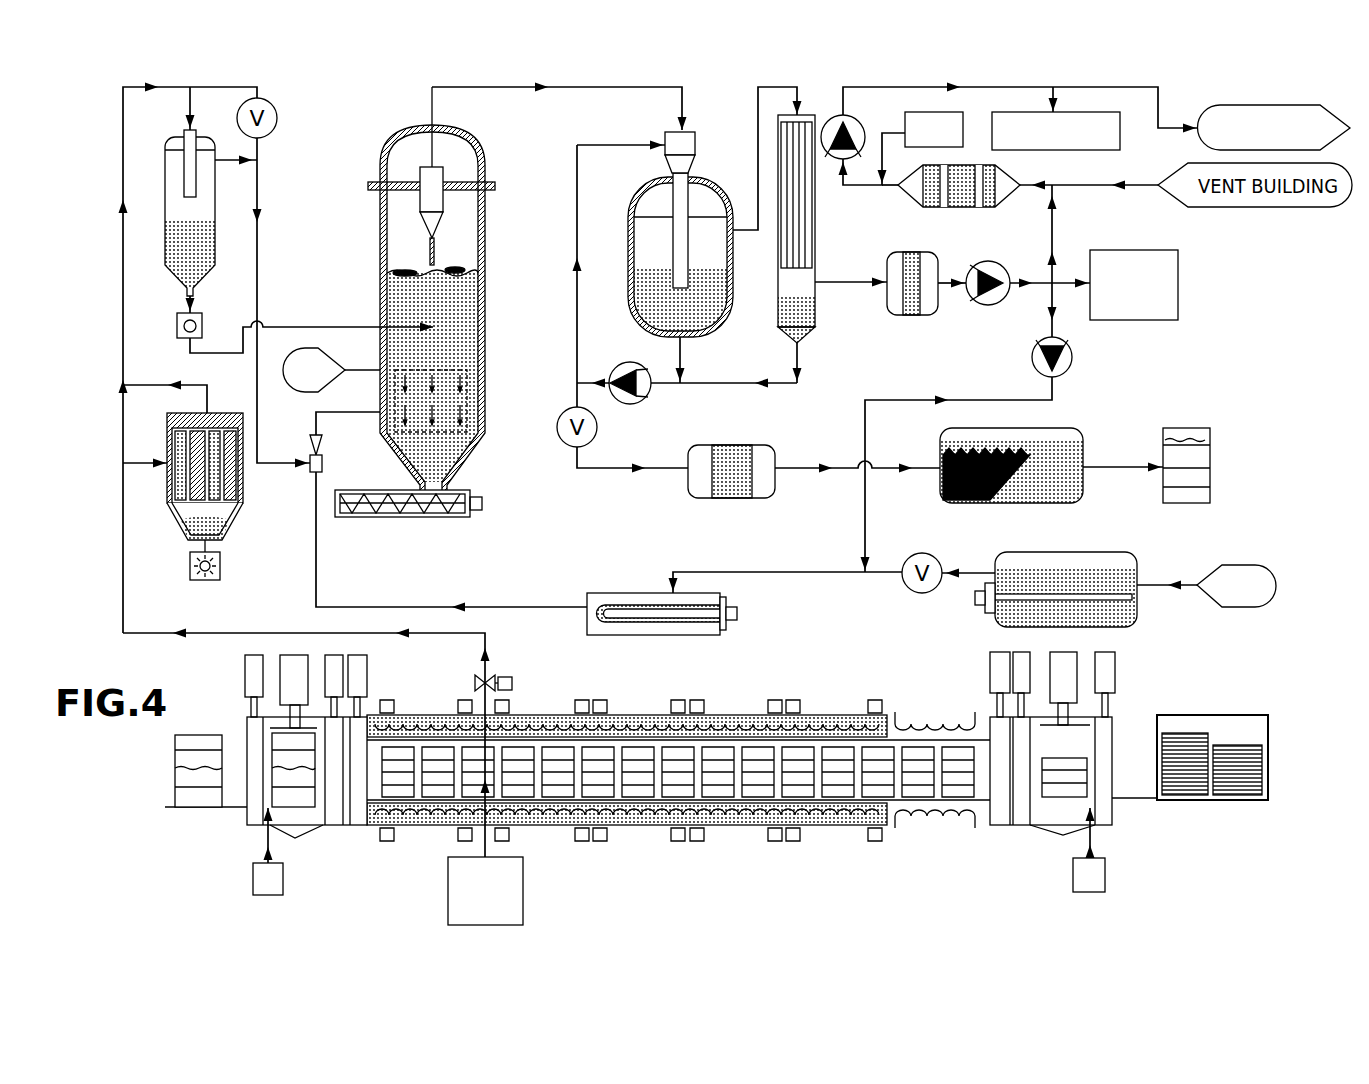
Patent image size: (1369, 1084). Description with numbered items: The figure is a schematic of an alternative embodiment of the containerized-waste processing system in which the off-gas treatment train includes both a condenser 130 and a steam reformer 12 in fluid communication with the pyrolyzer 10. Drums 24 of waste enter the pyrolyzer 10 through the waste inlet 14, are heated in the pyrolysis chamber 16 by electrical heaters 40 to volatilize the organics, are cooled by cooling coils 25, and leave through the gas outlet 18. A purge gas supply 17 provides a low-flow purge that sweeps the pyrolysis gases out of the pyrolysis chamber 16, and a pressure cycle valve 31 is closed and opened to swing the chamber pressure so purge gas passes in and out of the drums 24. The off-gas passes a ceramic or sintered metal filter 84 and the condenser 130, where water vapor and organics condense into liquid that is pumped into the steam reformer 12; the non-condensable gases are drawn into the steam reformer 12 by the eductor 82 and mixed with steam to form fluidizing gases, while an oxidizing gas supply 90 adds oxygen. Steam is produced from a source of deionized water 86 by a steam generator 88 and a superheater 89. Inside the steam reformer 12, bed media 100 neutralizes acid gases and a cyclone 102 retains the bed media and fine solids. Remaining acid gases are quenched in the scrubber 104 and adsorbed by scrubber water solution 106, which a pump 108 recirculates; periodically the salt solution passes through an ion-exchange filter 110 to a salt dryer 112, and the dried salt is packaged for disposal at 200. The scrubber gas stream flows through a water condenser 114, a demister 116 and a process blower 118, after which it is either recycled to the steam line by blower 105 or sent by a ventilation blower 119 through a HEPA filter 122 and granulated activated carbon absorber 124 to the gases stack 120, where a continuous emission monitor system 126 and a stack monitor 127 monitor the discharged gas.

The pyrolyzer 10 is at (658, 860).
The steam reformer 12 is at (433, 302).
The waste inlet 14 is at (342, 826).
The pyrolysis chamber 16 is at (825, 826).
The purge gas supply 17 is at (523, 890).
The gas outlet 18 is at (1021, 826).
The drums 24 is at (178, 742).
The cooling coils 25 is at (978, 826).
The pressure cycle valve 31 is at (475, 683).
The electrical heaters 40 is at (420, 812).
The eductor 82 is at (309, 443).
The ceramic or sintered metal filter 84 is at (167, 437).
The source of deionized water 86 is at (1240, 607).
The steam generator 88 is at (1075, 552).
The superheater 89 is at (620, 593).
The oxidizing gas supply 90 is at (304, 392).
The bed media 100 is at (455, 346).
The cyclone 102 is at (445, 170).
The scrubber 104 is at (703, 178).
The blower 105 is at (1072, 352).
The scrubber water solution 106 is at (690, 337).
The pump 108 is at (636, 404).
The ion-exchange filter 110 is at (722, 498).
The salt dryer 112 is at (1078, 430).
The water condenser 114 is at (817, 240).
The demister 116 is at (906, 316).
The process blower 118 is at (983, 306).
The ventilation blower 119 is at (836, 162).
The gases stack 120 is at (1218, 108).
The HEPA filter 122 is at (950, 208).
The granulated activated carbon absorber 124 is at (907, 118).
The continuous emission monitor system 126 is at (1150, 320).
The stack monitor 127 is at (1110, 150).
The condenser 130 is at (172, 140).
The salt disposal 200 is at (1203, 472).